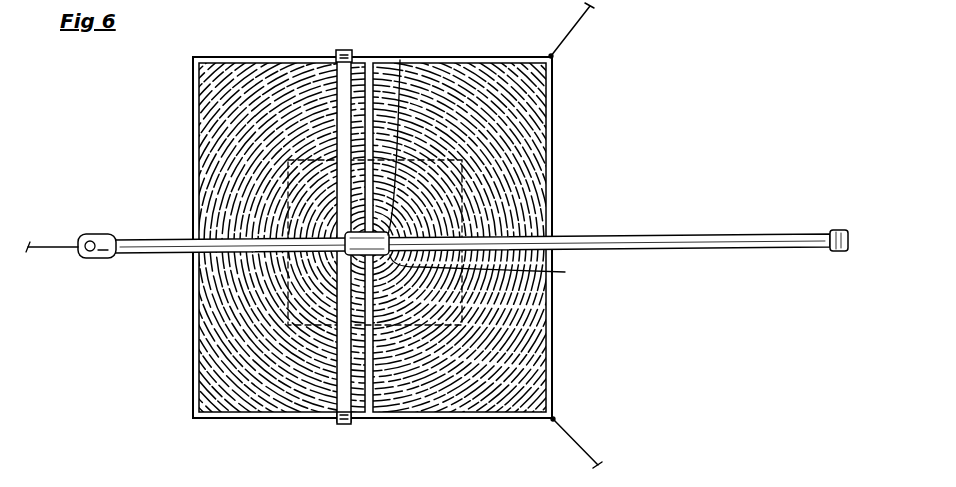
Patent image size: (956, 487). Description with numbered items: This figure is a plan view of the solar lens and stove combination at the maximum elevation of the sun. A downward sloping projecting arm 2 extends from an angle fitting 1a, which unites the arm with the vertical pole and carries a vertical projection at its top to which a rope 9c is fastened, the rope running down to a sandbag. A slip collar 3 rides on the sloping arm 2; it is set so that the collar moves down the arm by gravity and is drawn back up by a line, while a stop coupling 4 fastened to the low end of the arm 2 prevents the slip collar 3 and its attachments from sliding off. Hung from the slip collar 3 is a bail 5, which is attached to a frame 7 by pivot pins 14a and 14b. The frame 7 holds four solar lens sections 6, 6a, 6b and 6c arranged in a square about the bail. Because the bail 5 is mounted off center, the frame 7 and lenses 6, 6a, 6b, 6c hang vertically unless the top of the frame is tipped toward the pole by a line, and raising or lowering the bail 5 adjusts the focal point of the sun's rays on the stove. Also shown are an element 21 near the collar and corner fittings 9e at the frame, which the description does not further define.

The solar lens 6 is at (205, 97).
The solar lens 6a is at (528, 143).
The solar lens 6b is at (540, 348).
The solar lens 6c is at (215, 345).
The frame 7 is at (275, 420).
The bail 5 is at (341, 238).
The pivot pin 14a is at (344, 424).
The pivot pin 14b is at (344, 50).
The downward sloping projecting arm 2 is at (650, 238).
The slip collar 3 is at (400, 95).
The lead wire 21 is at (493, 271).
The angle fitting 1a is at (103, 234).
The rope 9c is at (56, 247).
The stop coupling 4 is at (840, 230).
The corner support pins 9e is at (578, 22).